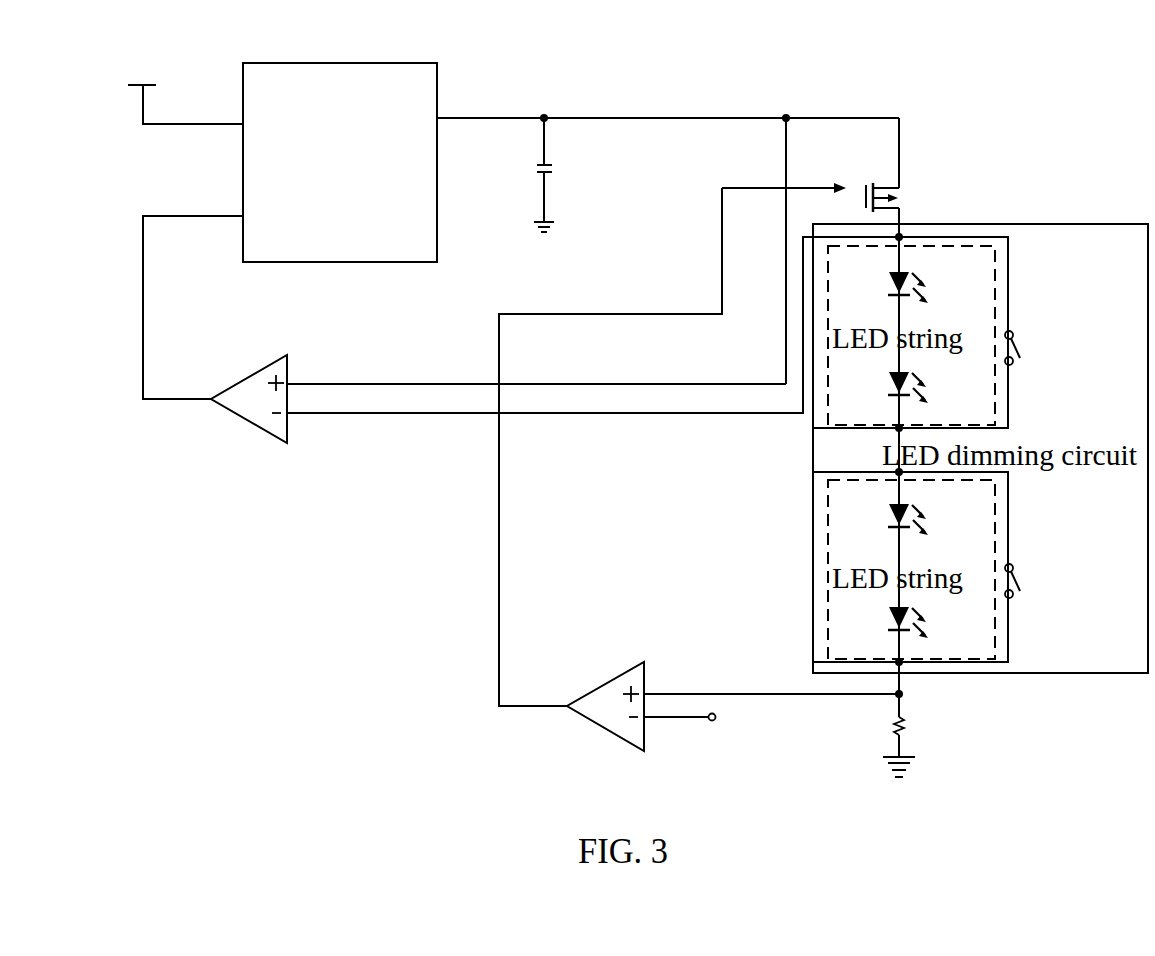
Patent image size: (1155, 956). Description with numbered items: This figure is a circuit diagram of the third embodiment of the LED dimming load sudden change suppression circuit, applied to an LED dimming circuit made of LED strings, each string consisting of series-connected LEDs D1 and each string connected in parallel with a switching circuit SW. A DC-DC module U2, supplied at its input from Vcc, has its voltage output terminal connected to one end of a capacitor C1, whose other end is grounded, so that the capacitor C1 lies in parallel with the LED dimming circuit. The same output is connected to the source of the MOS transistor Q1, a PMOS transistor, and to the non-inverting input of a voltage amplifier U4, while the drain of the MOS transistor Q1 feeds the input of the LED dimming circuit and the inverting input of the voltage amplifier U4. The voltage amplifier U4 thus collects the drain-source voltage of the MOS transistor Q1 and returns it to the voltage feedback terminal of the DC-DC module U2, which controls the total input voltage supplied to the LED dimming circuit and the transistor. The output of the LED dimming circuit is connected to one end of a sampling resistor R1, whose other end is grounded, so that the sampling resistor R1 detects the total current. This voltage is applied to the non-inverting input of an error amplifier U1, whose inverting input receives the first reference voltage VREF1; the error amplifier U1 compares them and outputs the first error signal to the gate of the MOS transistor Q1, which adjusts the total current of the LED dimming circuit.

The DC-DC module U2 is at (340, 146).
The supply voltage Vcc is at (185, 100).
The capacitor C1 is at (558, 175).
The MOS transistor Q1 is at (832, 177).
The LED D1 is at (928, 457).
The switching circuit SW is at (1034, 464).
The sampling resistor R1 is at (909, 734).
The voltage amplifier U4 is at (249, 396).
The error amplifier U1 is at (733, 708).
The first reference voltage VREF1 is at (698, 734).